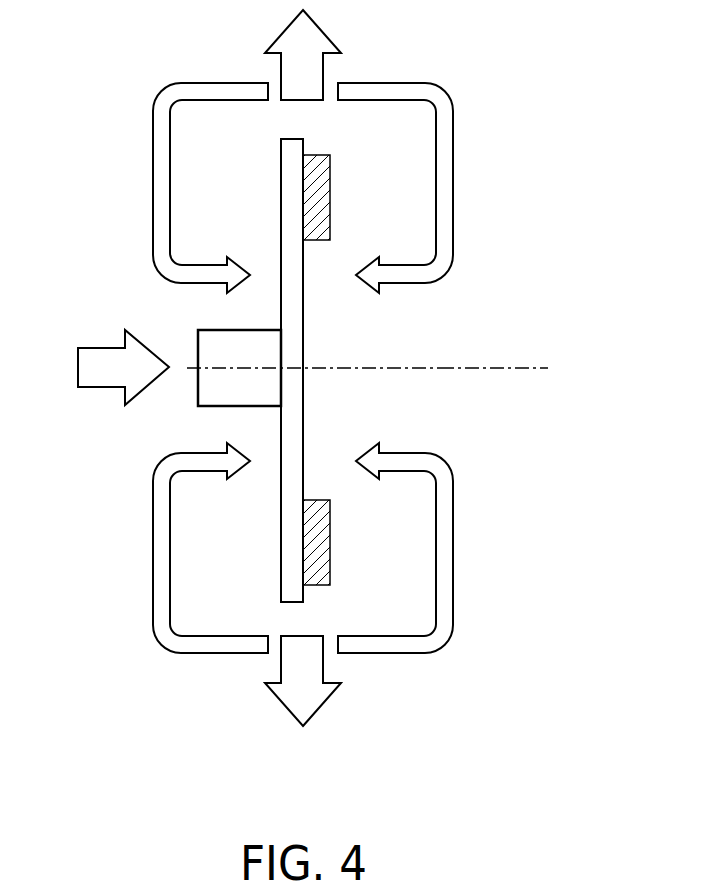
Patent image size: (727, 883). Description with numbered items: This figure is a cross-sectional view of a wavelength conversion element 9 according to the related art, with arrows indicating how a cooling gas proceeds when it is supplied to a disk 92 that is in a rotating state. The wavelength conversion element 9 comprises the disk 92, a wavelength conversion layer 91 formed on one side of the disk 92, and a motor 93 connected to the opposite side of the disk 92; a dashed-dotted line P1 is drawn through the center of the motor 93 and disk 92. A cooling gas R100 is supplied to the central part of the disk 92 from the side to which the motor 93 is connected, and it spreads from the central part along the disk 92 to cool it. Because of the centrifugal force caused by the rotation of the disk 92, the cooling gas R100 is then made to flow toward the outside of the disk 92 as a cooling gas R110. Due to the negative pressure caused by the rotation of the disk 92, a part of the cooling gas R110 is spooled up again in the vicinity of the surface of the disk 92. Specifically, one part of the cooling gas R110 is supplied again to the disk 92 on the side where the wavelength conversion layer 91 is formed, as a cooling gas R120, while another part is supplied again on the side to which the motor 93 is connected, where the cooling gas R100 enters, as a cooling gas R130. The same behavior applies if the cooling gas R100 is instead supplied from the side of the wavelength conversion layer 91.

The cooling gas R110 is at (312, 32).
The cooling gas R120 is at (442, 178).
The cooling gas R130 is at (158, 175).
The cooling gas R100 is at (95, 357).
The wavelength conversion element 9 is at (365, 357).
The wavelength conversion layer 91 is at (320, 193).
The disk 92 is at (280, 532).
The motor 93 is at (205, 389).
The rotation axis / reference plane P1 is at (533, 368).